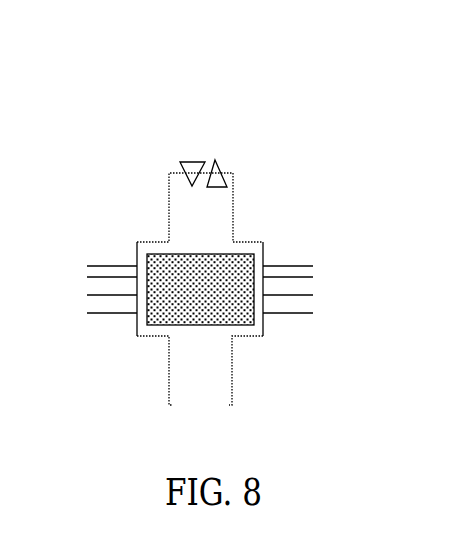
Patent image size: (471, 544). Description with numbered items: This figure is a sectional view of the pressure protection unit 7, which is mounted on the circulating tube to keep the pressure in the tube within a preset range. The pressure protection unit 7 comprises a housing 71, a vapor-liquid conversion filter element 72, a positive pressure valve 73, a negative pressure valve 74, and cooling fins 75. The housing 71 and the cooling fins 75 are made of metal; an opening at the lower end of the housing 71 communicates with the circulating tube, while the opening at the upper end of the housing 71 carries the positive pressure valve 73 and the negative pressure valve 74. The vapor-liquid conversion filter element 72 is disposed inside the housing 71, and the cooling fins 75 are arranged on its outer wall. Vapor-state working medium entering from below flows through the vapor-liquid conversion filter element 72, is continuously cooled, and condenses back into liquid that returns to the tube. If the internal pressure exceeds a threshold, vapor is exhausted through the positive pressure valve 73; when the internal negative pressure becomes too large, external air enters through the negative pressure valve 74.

The pressure protection unit 7 is at (241, 53).
The housing 71 is at (170, 218).
The vapor-liquid conversion filter element 72 is at (253, 257).
The positive pressure valve 73 is at (193, 161).
The negative pressure valve 74 is at (215, 180).
The cooling fins 75 is at (307, 313).